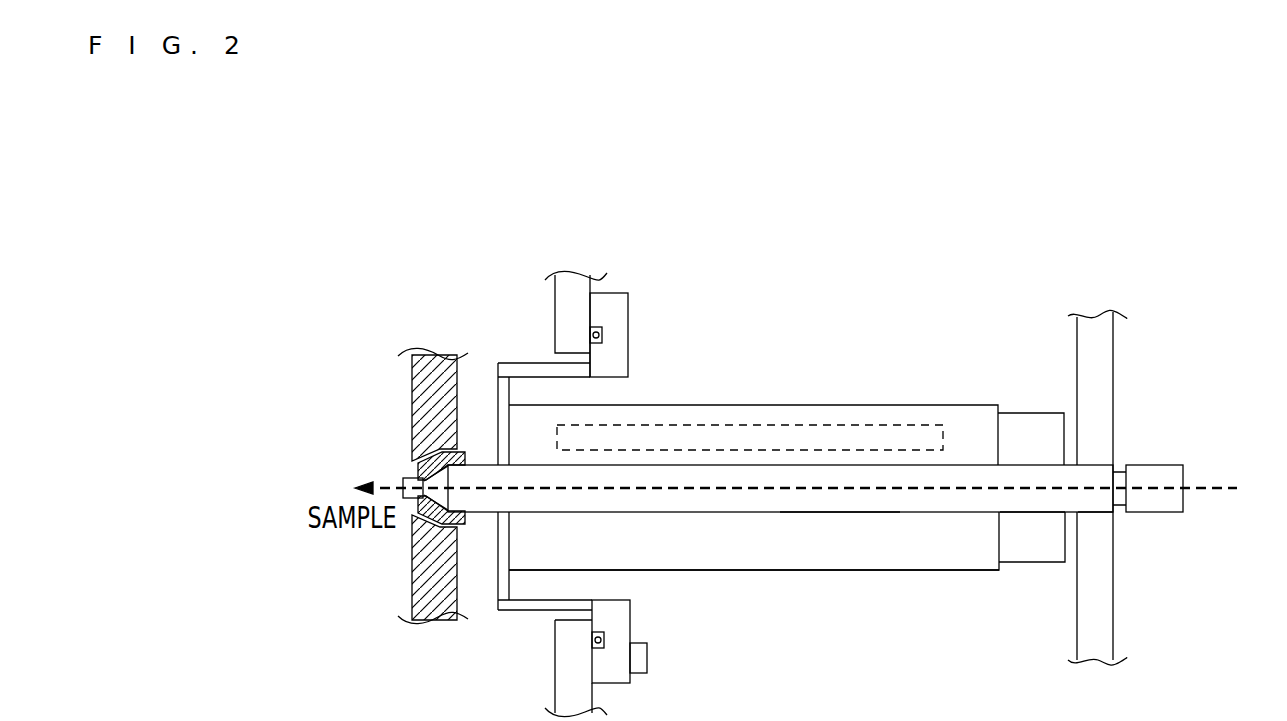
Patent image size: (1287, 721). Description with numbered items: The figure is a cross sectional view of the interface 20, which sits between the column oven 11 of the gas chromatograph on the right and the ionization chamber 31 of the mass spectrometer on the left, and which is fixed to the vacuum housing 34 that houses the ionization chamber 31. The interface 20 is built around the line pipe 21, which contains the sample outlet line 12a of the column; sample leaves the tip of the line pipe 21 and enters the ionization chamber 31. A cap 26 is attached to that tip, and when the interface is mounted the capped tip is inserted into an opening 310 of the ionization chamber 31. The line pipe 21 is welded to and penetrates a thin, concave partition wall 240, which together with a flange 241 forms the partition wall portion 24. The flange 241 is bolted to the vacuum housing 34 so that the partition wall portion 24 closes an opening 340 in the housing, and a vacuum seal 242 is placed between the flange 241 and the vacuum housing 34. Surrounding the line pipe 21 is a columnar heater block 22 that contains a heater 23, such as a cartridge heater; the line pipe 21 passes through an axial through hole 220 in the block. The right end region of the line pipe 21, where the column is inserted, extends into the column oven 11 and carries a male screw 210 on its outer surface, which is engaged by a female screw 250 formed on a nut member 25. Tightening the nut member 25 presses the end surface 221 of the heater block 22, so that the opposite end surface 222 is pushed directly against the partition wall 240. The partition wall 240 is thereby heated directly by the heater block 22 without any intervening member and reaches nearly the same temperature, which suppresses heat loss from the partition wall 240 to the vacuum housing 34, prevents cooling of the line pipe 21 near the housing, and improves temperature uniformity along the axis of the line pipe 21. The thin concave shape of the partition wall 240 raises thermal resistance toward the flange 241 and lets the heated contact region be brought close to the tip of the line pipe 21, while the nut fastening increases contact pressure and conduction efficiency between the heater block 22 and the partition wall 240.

The column oven 11 is at (1100, 358).
The sample outlet line 12a is at (1207, 493).
The interface 20 is at (888, 382).
The line pipe 21 is at (917, 500).
The male screw 210 is at (1100, 512).
The heater block 22 is at (765, 555).
The through hole 220 is at (816, 512).
The end surface 221 is at (1013, 408).
The end surface 222 is at (509, 577).
The heater 23 is at (802, 418).
The partition wall portion 24 is at (507, 227).
The partition wall 240 is at (503, 387).
The flange 241 is at (612, 322).
The vacuum seal 242 is at (602, 335).
The nut member 25 is at (1013, 553).
The female screw 250 is at (1037, 512).
The cap 26 is at (457, 450).
The ionization chamber 31 is at (422, 580).
The opening 310 is at (407, 467).
The vacuum housing 34 is at (565, 683).
The opening 340 is at (570, 617).